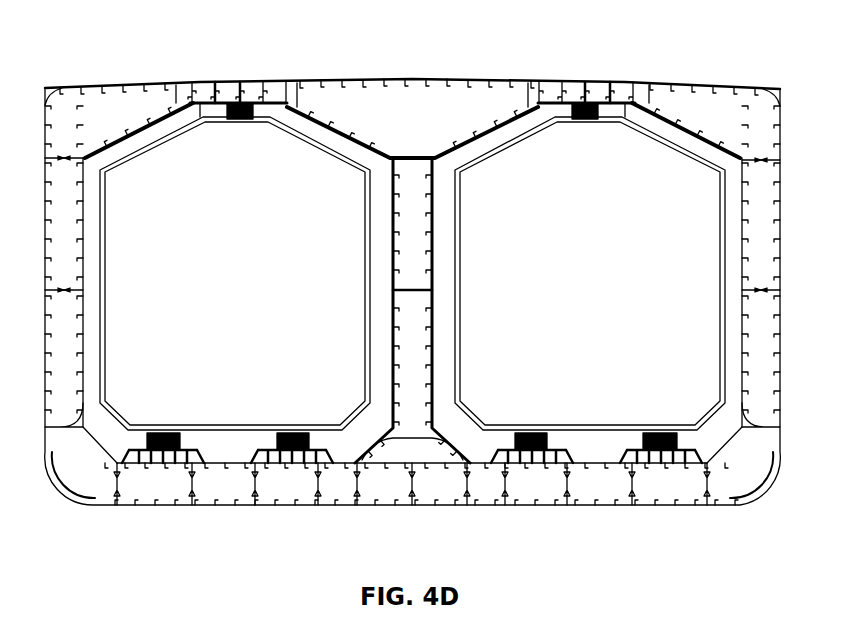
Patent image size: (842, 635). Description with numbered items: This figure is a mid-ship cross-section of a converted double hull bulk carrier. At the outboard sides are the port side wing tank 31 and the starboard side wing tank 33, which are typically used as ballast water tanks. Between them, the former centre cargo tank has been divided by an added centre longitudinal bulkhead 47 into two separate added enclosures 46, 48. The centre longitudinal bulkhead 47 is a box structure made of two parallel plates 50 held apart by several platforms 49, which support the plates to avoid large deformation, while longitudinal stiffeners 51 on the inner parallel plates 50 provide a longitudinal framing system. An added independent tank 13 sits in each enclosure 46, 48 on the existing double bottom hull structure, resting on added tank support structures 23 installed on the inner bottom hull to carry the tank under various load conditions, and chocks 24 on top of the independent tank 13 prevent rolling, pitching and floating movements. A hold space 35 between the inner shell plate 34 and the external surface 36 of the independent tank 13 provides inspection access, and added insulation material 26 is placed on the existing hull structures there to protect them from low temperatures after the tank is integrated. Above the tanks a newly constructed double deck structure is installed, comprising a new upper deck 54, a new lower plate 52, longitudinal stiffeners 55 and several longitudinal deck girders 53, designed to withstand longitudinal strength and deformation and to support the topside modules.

The added independent tank 13 is at (206, 110).
The longitudinal deck girders 53 is at (243, 80).
The new upper deck 54 is at (335, 78).
The longitudinal stiffeners 55 is at (518, 105).
The chocks 24 is at (252, 122).
The new lower plate 52 is at (385, 152).
The longitudinal stiffeners 51 is at (433, 228).
The added centre longitudinal bulkhead 47 is at (432, 310).
The platforms 49 is at (422, 291).
The parallel plates 50 is at (432, 336).
The added enclosure 46 is at (235, 273).
The added enclosure 48 is at (590, 273).
The hold space 35 is at (101, 247).
The external surface 36 is at (107, 281).
The inner shell plate 34 is at (85, 337).
The port side wing tank 31 is at (81, 284).
The starboard side wing tank 33 is at (743, 284).
The added tank support structures 23 is at (197, 455).
The added insulation material 26 is at (593, 443).